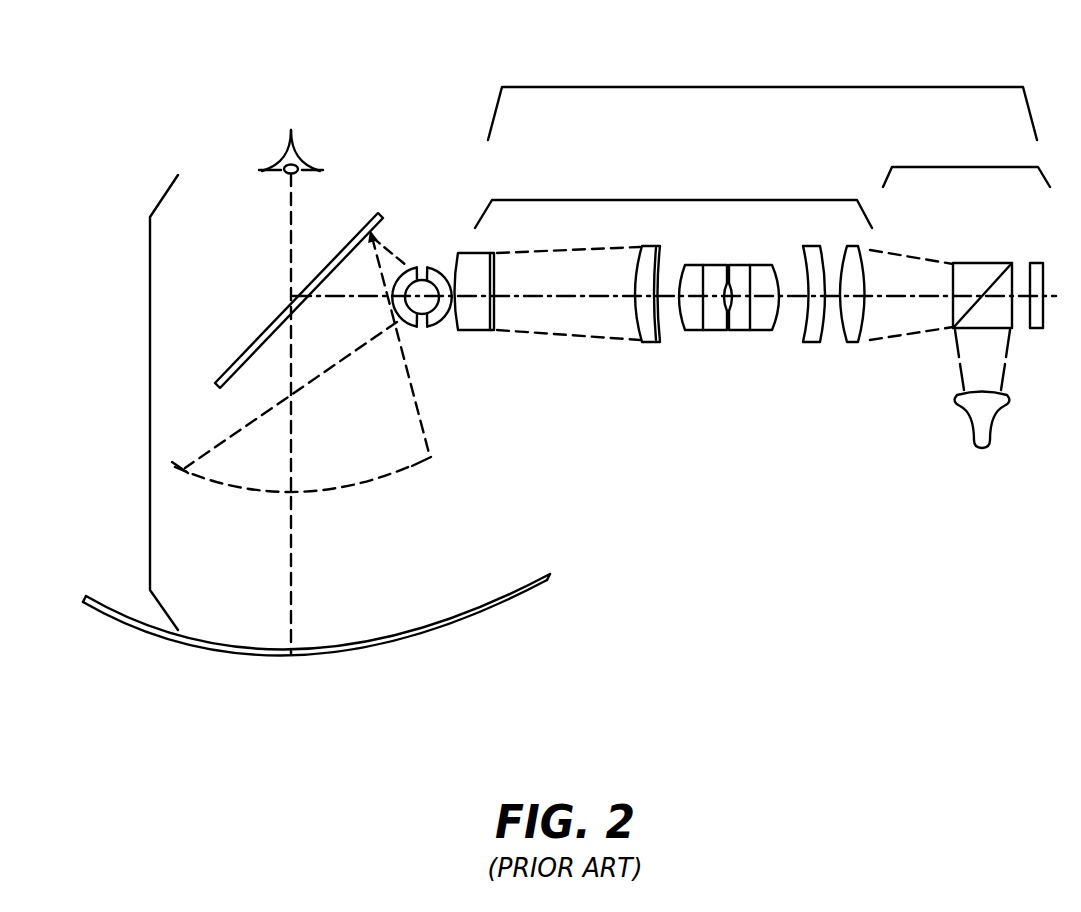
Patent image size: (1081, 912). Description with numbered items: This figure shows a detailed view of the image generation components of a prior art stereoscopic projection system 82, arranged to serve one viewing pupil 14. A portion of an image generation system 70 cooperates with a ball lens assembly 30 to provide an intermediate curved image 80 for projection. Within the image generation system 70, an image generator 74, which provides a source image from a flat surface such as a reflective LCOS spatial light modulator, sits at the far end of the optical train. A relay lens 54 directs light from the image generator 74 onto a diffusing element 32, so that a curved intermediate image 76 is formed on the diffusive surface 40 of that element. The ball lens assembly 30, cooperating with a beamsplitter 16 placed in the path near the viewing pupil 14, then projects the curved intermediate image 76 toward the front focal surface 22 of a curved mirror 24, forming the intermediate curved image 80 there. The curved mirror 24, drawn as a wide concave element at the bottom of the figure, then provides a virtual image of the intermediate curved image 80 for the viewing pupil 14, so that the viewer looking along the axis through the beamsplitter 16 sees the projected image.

The viewing pupil 14 is at (267, 171).
The beamsplitter 16 is at (292, 298).
The front focal surface 22 is at (413, 465).
The curved mirror 24 is at (510, 607).
The ball lens assembly 30 is at (397, 277).
The diffusing element 32 is at (495, 330).
The diffusive surface 40 is at (477, 371).
The relay lens 54 is at (672, 200).
The image generation system 70 is at (760, 87).
The image generator 74 is at (967, 167).
The curved intermediate image 76 is at (430, 327).
The intermediate curved image 80 is at (320, 492).
The stereoscopic projection system 82 is at (148, 403).